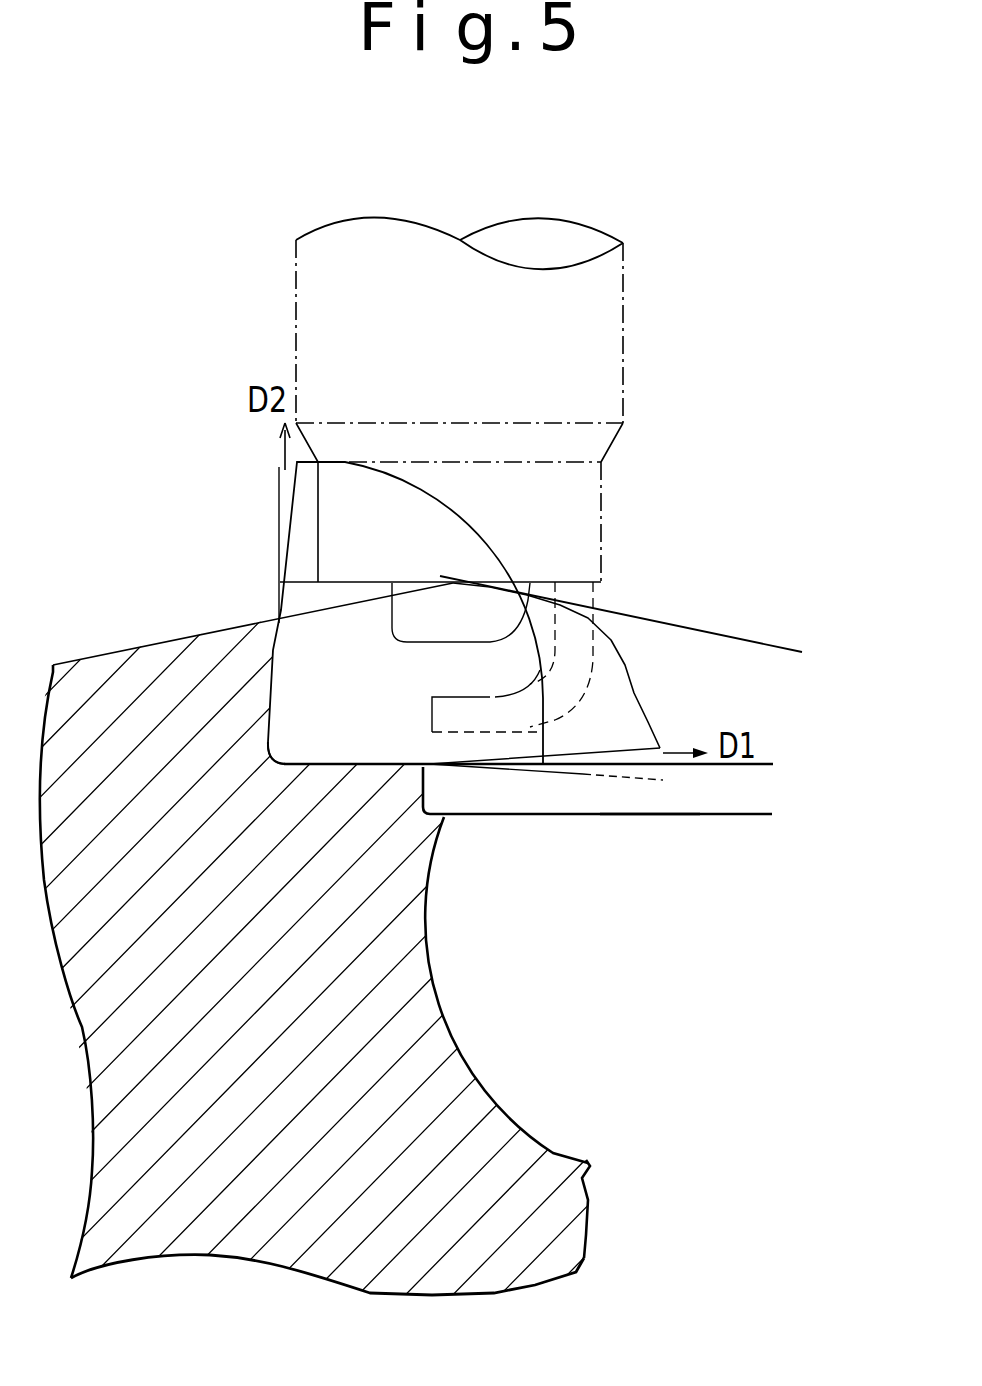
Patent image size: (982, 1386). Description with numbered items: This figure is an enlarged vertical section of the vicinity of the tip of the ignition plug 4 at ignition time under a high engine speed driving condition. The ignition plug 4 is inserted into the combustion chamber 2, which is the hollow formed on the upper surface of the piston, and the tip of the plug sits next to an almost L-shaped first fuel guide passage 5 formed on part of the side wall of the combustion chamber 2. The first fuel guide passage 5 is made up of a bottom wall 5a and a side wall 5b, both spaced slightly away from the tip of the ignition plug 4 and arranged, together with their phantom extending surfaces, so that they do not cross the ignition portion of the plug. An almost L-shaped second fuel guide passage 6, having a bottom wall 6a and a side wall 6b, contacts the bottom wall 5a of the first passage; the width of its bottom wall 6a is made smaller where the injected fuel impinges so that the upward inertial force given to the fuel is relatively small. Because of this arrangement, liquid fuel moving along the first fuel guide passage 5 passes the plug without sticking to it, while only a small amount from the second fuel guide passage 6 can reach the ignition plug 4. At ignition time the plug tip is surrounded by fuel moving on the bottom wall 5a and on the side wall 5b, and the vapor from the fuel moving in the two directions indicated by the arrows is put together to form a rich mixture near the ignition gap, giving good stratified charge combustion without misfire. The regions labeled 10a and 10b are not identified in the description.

The combustion chamber 2 is at (640, 1030).
The ignition plug 4 is at (597, 350).
The first fuel guide passage 5 is at (765, 658).
The bottom wall 5a is at (327, 758).
The side wall 5b is at (290, 679).
The second fuel guide passage 6 is at (748, 797).
The bottom wall 6a is at (648, 803).
The side wall 6b is at (440, 781).
The outer portion of cutting insert 10a is at (627, 703).
The inner portion of cutting insert 10b is at (335, 520).